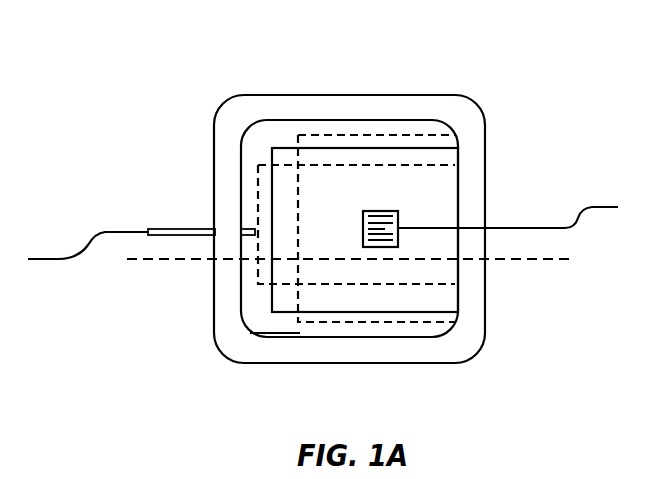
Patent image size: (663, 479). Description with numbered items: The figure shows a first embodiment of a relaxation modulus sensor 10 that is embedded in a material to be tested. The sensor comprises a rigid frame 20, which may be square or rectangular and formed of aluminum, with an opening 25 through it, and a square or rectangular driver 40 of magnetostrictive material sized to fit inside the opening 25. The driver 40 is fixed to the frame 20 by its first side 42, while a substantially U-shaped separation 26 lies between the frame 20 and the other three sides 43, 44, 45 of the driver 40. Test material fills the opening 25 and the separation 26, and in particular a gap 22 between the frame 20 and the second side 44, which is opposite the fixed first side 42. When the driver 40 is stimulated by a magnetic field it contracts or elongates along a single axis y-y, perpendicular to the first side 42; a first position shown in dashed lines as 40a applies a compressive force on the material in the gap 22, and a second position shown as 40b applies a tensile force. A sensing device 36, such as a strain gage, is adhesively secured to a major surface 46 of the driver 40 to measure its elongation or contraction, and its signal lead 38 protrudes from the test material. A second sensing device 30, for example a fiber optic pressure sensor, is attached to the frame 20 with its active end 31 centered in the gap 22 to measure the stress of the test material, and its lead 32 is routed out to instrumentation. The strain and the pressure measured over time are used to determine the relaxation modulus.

The relaxation modulus sensor 10 is at (508, 88).
The frame 20 is at (353, 105).
The gap 22 is at (258, 248).
The opening 25 is at (408, 120).
The separation 26 is at (264, 332).
The second sensing device 30 is at (184, 229).
The active end 31 is at (245, 228).
The lead 32 is at (88, 240).
The sensing device 36 is at (398, 213).
The signal lead 38 is at (540, 228).
The driver 40 is at (297, 187).
The driver first position 40a is at (443, 288).
The driver second position 40b is at (317, 322).
The first side 42 is at (458, 263).
The side 43 is at (398, 312).
The second side 44 is at (267, 278).
The side 45 is at (341, 147).
The major surface 46 is at (335, 197).